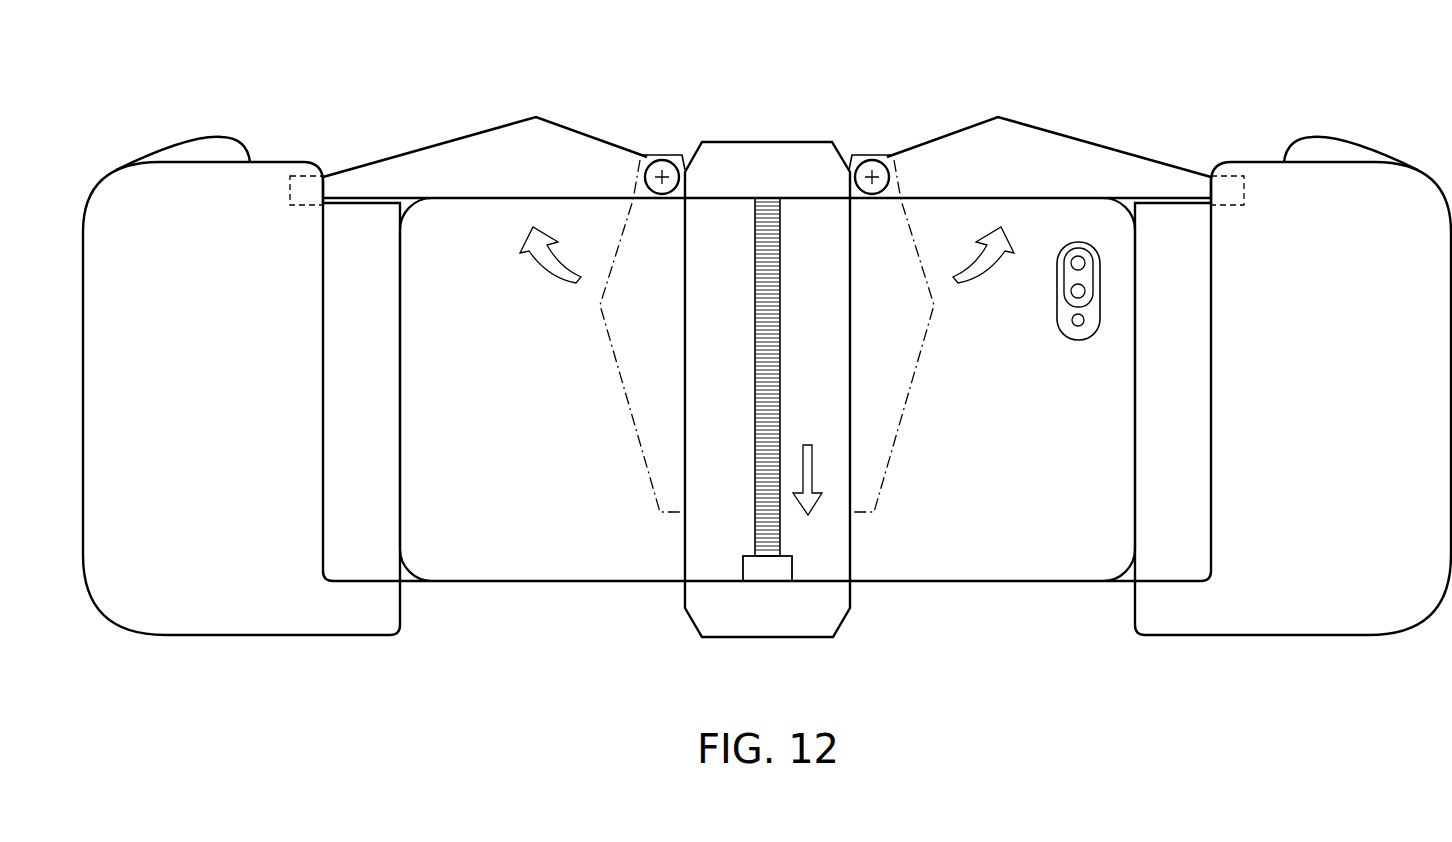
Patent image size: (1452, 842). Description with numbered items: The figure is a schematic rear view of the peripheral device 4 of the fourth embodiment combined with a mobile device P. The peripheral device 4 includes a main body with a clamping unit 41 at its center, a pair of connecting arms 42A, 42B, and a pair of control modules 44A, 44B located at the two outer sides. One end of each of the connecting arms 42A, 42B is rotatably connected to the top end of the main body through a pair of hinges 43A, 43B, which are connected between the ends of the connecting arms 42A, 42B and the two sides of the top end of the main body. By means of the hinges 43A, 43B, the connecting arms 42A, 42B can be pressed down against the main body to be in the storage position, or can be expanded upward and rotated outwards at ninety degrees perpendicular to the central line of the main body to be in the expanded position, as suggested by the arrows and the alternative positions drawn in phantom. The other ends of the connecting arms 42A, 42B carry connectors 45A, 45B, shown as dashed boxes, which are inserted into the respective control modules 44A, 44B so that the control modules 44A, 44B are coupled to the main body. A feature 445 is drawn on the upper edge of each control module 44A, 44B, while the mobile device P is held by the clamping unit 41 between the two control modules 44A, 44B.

The peripheral device 4 is at (767, 349).
The clamping unit 41 is at (766, 160).
The connecting arm 42A is at (462, 154).
The connecting arm 42B is at (1076, 154).
The hinge 43A is at (660, 161).
The hinge 43B is at (874, 161).
The control module 44A is at (275, 168).
The control module 44B is at (1262, 168).
The connector 45A is at (300, 207).
The connector 45B is at (1235, 207).
The protrusion 445 is at (222, 153).
The portable electronic device P is at (531, 196).